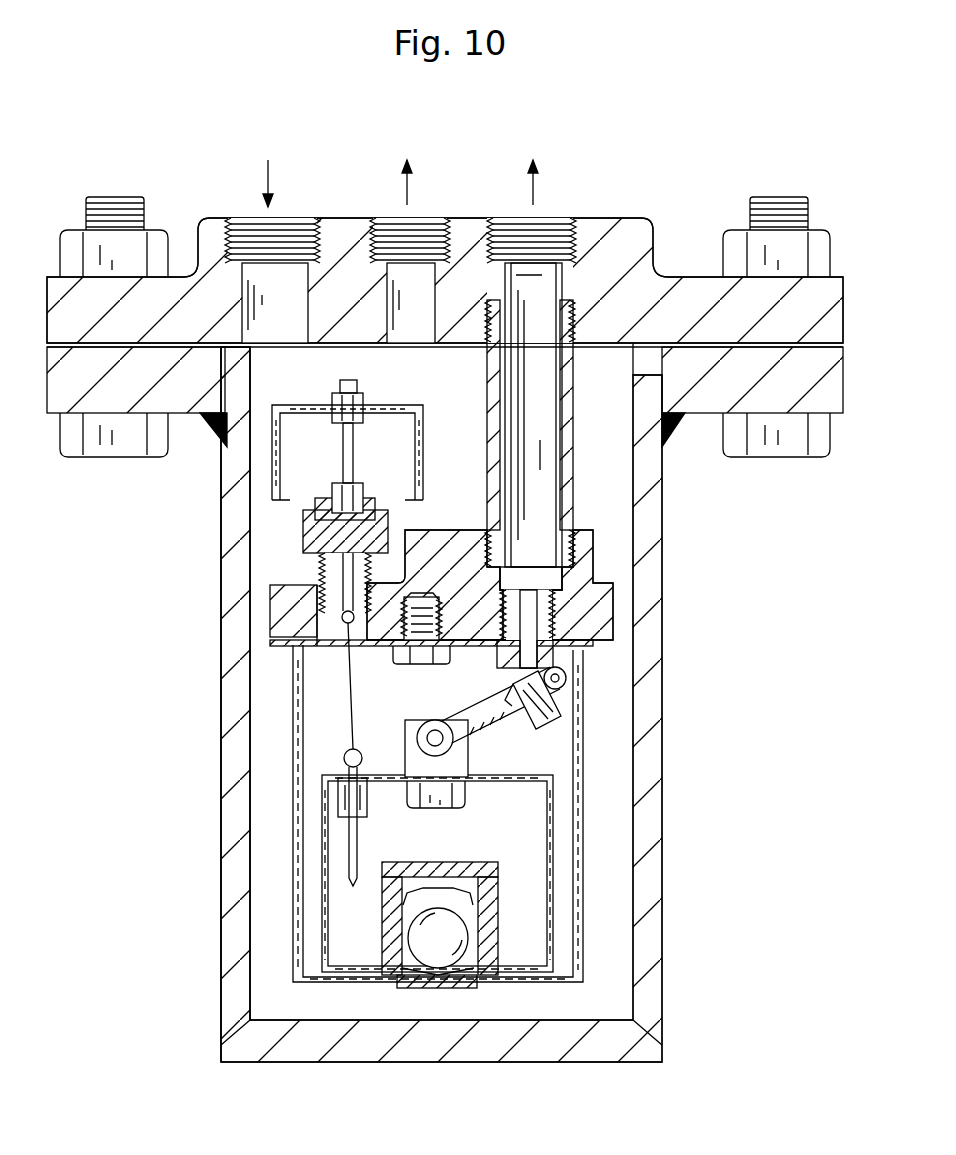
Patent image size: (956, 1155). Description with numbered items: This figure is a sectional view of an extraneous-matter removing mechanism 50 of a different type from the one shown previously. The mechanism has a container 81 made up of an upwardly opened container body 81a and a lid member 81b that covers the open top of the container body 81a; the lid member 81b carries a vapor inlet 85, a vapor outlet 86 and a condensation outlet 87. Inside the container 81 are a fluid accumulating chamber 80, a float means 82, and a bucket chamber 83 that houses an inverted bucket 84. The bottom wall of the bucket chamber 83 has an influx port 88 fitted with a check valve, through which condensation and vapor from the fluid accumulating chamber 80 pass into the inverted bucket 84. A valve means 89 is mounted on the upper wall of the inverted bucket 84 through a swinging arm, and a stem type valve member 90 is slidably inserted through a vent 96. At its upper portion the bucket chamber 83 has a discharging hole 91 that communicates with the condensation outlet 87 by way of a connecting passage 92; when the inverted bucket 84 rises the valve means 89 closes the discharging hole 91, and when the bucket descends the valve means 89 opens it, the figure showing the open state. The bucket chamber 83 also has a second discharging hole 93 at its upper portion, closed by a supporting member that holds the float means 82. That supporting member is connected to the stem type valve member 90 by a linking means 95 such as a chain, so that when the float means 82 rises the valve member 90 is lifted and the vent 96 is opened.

The extraneous-matter removing mechanism 50 is at (192, 678).
The fluid accumulating chamber 80 is at (605, 538).
The container 81 is at (434, 702).
The container body 81a is at (222, 730).
The lid member 81b is at (625, 218).
The float means 82 is at (275, 478).
The bucket chamber 83 is at (580, 838).
The inverted bucket 84 is at (553, 905).
The vapor inlet 85 is at (290, 243).
The vapor outlet 86 is at (432, 243).
The condensation outlet 87 is at (552, 243).
The influx port 88 is at (433, 990).
The valve means 89 is at (507, 708).
The stem type valve member 90 is at (367, 785).
The discharging hole 91 is at (556, 604).
The connecting passage 92 is at (568, 462).
The second discharging hole 93 is at (315, 530).
The linking means 95 is at (343, 688).
The vent 96 is at (345, 805).